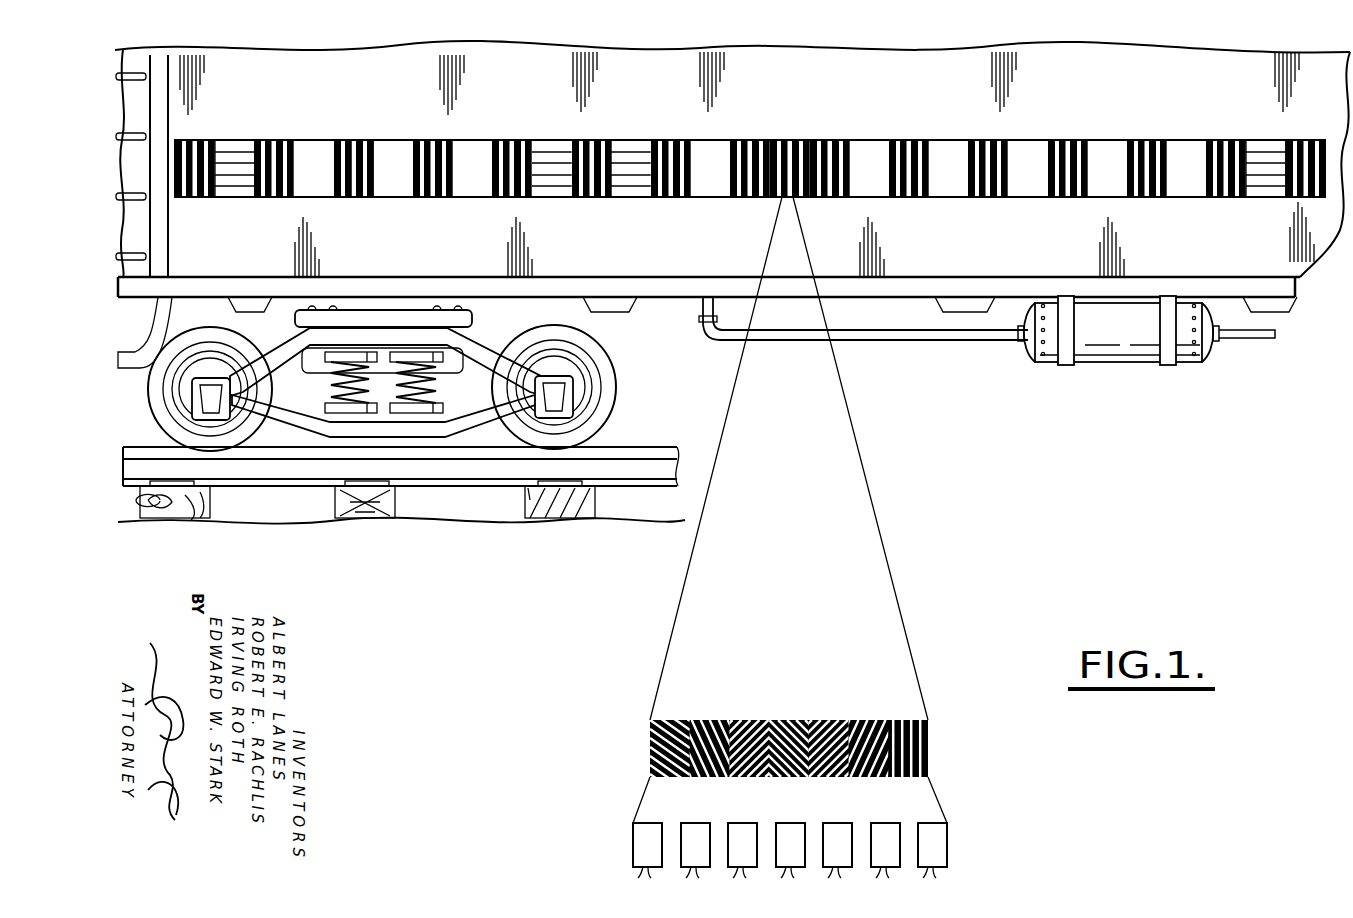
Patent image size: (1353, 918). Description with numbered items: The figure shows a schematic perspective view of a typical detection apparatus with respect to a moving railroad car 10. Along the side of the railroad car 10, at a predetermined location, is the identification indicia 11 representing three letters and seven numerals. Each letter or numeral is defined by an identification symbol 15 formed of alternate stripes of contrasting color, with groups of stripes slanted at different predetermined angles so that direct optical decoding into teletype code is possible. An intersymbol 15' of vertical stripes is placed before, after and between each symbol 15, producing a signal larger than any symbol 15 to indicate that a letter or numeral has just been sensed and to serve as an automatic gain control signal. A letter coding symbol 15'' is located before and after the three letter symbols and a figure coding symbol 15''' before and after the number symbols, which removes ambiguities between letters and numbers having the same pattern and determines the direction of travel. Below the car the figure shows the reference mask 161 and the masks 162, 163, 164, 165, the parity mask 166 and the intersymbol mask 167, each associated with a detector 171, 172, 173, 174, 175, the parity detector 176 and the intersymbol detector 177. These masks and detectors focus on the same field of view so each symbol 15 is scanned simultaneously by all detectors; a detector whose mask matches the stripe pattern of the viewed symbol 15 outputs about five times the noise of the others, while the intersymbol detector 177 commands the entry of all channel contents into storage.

The railroad car 10 is at (1212, 238).
The identification indicia 11 is at (993, 197).
The identification symbol 15 is at (565, 148).
The intersymbol 15' is at (749, 188).
The letter coding symbol 15'' is at (393, 142).
The figure coding symbol 15''' is at (948, 141).
The reference mask 161 is at (650, 727).
The mask 162 is at (710, 720).
The mask 163 is at (748, 720).
The mask 164 is at (788, 720).
The mask 165 is at (826, 720).
The parity mask 166 is at (868, 720).
The intersymbol mask 167 is at (928, 723).
The detector 171 is at (633, 844).
The detector 172 is at (692, 823).
The detector 173 is at (742, 823).
The detector 174 is at (790, 823).
The detector 175 is at (837, 823).
The parity detector 176 is at (884, 823).
The intersymbol detector 177 is at (947, 842).